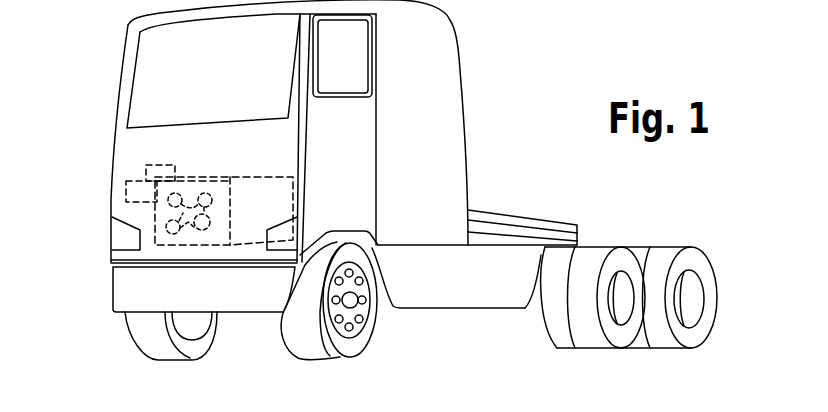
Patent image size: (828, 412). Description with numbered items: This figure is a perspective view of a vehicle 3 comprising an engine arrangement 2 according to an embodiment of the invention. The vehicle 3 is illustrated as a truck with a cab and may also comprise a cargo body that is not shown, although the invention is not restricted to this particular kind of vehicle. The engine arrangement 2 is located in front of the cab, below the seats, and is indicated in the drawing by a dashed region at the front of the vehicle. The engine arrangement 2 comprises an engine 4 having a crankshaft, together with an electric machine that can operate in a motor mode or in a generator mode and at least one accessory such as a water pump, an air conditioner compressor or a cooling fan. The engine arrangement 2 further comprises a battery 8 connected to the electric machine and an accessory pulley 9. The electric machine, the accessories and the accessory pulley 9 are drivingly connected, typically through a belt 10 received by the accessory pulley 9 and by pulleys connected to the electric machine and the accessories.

The engine arrangement 2 is at (277, 178).
The vehicle 3 is at (103, 77).
The engine 4 is at (231, 176).
The battery 8 is at (134, 192).
The accessory pulley 9 is at (200, 229).
The belt 10 is at (187, 230).